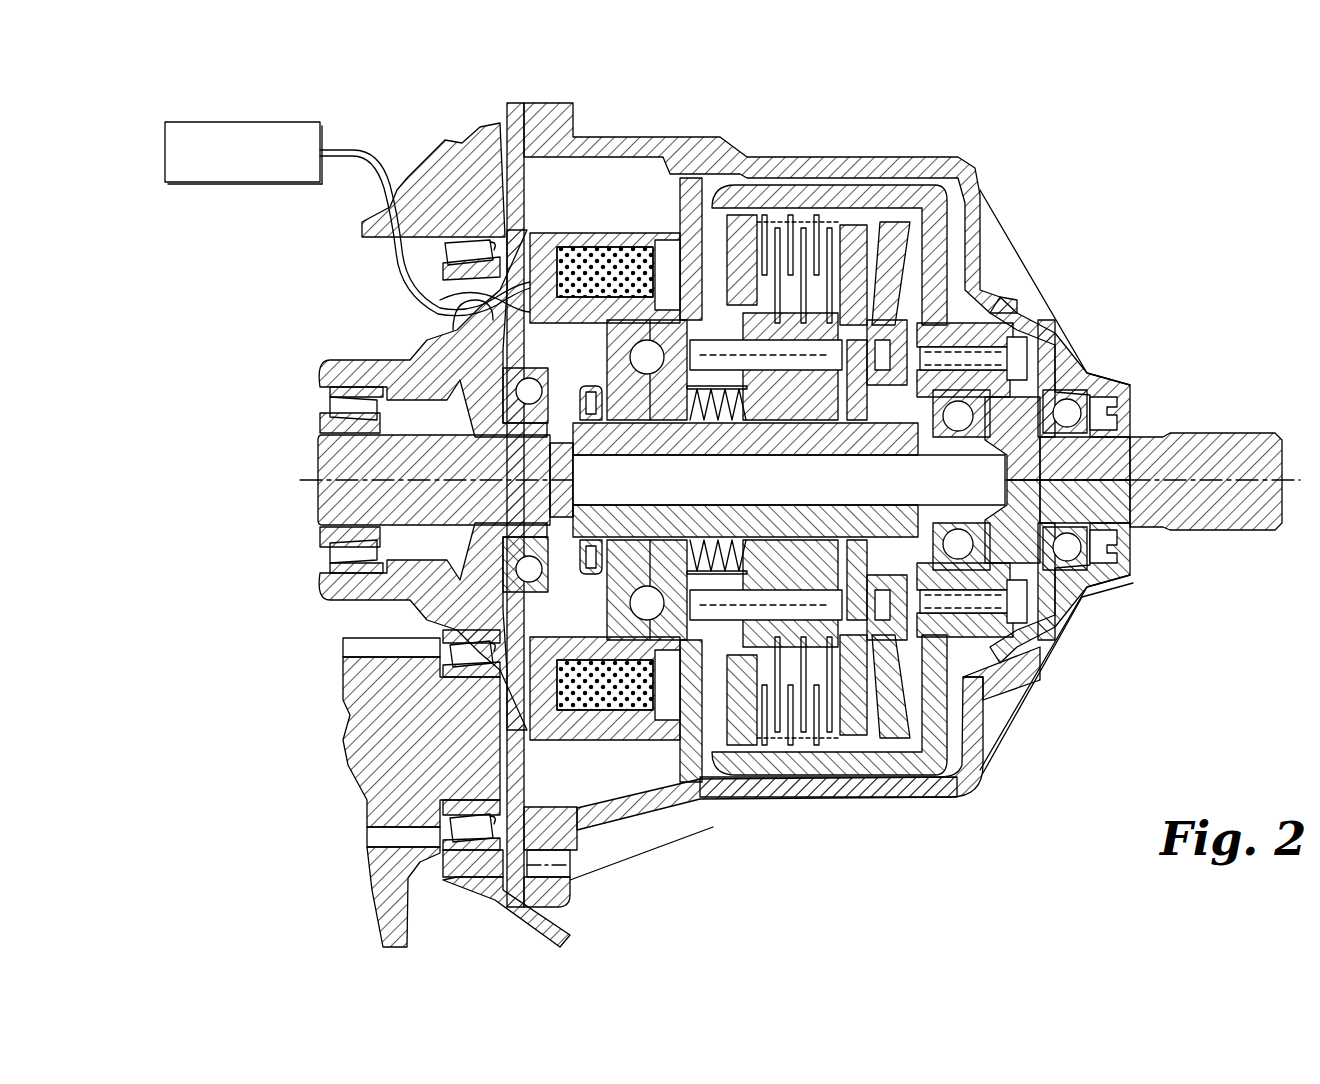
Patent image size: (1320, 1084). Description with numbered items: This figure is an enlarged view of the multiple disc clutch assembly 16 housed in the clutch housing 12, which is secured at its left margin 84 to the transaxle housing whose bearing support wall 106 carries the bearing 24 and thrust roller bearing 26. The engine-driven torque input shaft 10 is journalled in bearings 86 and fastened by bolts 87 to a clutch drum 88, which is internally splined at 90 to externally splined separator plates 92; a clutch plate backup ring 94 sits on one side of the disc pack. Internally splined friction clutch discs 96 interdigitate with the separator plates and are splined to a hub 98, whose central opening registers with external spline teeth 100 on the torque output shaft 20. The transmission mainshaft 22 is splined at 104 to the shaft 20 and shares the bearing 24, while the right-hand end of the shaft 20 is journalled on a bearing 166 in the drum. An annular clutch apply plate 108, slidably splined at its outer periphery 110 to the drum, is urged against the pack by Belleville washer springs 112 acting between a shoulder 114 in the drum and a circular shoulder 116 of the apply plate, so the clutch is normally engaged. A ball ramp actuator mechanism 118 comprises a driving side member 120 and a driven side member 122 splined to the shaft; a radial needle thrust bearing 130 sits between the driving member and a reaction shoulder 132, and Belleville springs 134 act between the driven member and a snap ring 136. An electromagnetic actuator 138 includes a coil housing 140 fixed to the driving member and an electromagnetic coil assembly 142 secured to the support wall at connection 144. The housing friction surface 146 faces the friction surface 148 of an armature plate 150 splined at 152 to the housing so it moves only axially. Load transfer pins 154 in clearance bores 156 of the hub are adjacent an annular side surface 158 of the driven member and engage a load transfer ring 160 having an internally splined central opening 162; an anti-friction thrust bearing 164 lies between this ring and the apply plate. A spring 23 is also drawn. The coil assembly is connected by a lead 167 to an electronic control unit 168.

The torque input shaft 10 is at (1235, 425).
The clutch housing 12 is at (980, 320).
The multiple disc clutch assembly 16 is at (830, 198).
The torque output shaft 20 is at (810, 455).
The mainshaft 22 is at (345, 463).
The spring 23 is at (783, 590).
The bearing 24 is at (520, 392).
The thrust roller bearing 26 is at (350, 560).
The left margin 84 is at (565, 885).
The bearings 86 is at (1065, 395).
The bolts 87 is at (1015, 352).
The clutch drum 88 is at (1010, 320).
The internal splines 90 is at (870, 225).
The clutch friction disc separator plates 92 is at (787, 215).
The clutch plate backup ring 94 is at (735, 250).
The friction clutch discs 96 is at (782, 400).
The hub 98 is at (803, 390).
The external spline teeth 100 is at (912, 458).
The spline 104 is at (423, 748).
The bearing support wall 106 is at (500, 235).
The clutch apply plate 108 is at (965, 770).
The outer periphery 110 is at (840, 790).
The Belleville washer springs 112 is at (935, 790).
The shoulder 114 is at (880, 790).
The circular shoulder 116 is at (975, 720).
The ball ramp actuator mechanism 118 is at (567, 742).
The driving side member 120 is at (615, 742).
The driven side member 122 is at (630, 612).
The radial needle thrust bearing 130 is at (540, 447).
The reaction shoulder 132 is at (567, 480).
The Belleville springs 134 is at (800, 605).
The snap ring 136 is at (735, 440).
The electromagnetic actuator 138 is at (600, 220).
The coil housing 140 is at (455, 370).
The electromagnetic coil assembly 142 is at (490, 160).
The connection 144 is at (465, 300).
The electromagnetic clutch friction surface 146 is at (687, 745).
The friction surface 148 is at (660, 820).
The clutch actuator armature plate 150 is at (718, 820).
The spline 152 is at (690, 810).
The load transfer pins 154 is at (815, 605).
The clearance bores 156 is at (780, 790).
The annular side surface 158 is at (752, 625).
The load transfer ring 160 is at (1000, 640).
The internally splined central opening 162 is at (1030, 610).
The anti-friction thrust bearing 164 is at (1000, 680).
The bearing 166 is at (1030, 494).
The lead 167 is at (375, 200).
The electronic control unit 168 is at (215, 183).